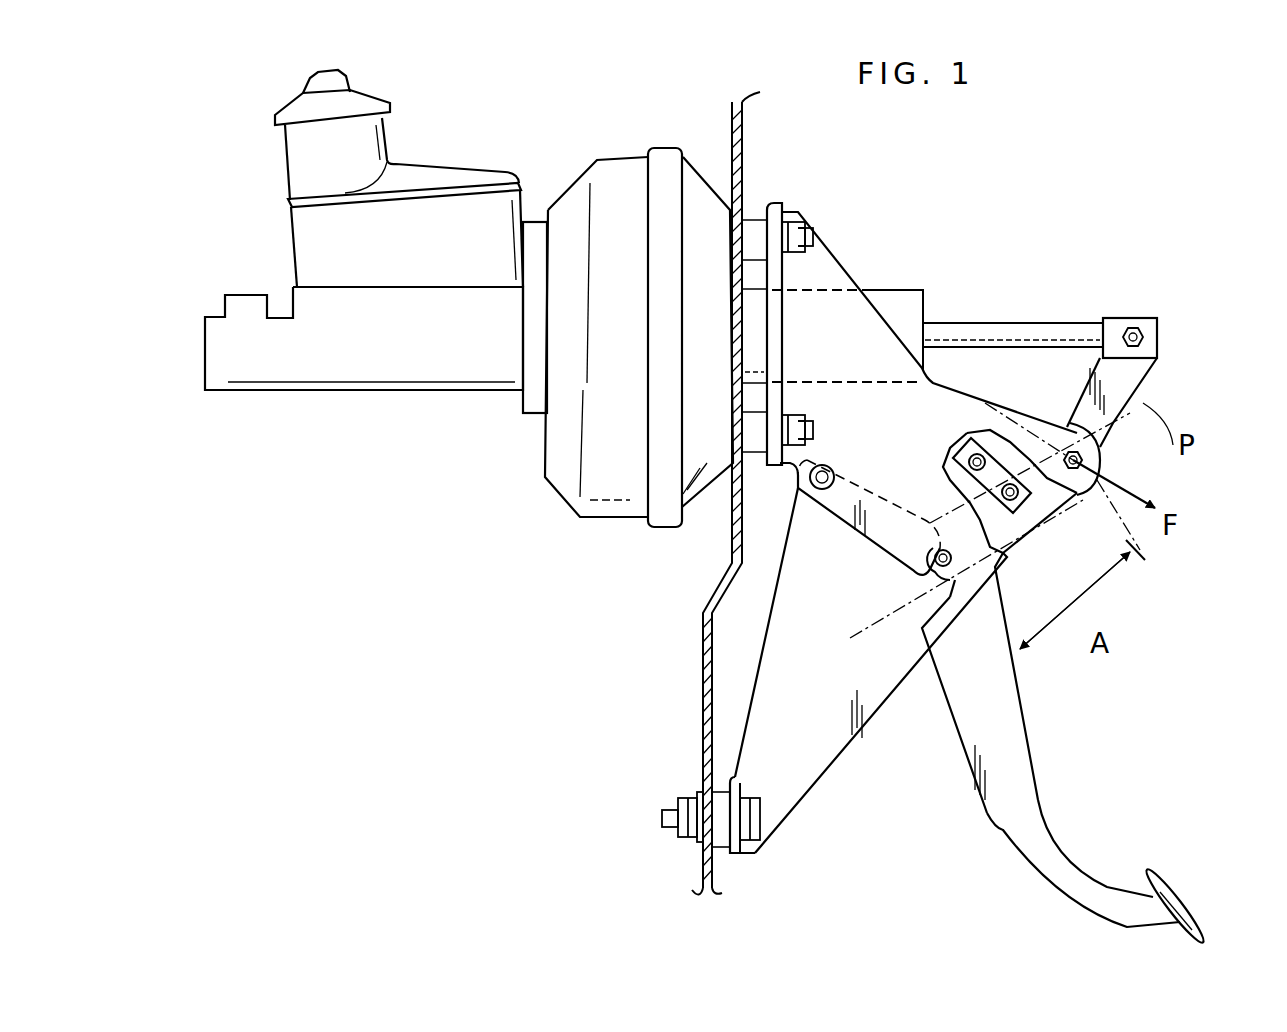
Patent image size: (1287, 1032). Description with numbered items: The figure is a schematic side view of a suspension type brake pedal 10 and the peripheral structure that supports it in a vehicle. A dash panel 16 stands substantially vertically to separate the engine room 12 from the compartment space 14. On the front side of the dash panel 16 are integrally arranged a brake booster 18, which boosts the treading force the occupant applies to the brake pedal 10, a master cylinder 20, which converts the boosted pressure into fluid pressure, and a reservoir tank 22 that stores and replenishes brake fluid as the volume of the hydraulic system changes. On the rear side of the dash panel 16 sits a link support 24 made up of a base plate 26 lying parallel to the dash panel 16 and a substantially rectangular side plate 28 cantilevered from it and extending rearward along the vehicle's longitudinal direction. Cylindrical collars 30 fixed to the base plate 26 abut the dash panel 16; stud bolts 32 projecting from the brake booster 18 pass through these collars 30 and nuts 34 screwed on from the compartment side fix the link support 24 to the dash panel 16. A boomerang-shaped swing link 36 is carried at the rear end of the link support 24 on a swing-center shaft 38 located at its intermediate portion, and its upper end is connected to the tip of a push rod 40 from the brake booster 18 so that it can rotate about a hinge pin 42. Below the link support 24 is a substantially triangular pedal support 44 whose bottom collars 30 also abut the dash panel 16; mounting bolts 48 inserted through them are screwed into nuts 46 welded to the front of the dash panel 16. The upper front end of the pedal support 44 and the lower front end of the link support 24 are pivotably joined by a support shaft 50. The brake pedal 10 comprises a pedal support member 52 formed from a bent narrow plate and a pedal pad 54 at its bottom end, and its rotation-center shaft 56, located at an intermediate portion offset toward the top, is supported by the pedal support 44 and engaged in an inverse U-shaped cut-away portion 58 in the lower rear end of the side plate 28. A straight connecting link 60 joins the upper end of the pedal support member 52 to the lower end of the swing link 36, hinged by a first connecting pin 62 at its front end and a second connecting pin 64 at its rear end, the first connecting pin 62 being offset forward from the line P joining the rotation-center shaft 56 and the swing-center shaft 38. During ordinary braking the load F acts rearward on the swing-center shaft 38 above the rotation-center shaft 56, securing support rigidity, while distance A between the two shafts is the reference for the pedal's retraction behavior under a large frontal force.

The brake pedal 10 is at (1043, 800).
The engine room 12 is at (637, 752).
The compartment space 14 is at (911, 752).
The dash panel 16 is at (703, 668).
The brake booster 18 is at (567, 483).
The master cylinder 20 is at (457, 378).
The reservoir tank 22 is at (497, 172).
The link support 24 is at (848, 263).
The base plate 26 is at (778, 208).
The side plate 28 is at (873, 338).
The cylindrical collars 30 is at (757, 225).
The stud bolts 32 is at (810, 236).
The nuts 34 is at (795, 215).
The swing link 36 is at (1140, 380).
The swing-center shaft 38 is at (1066, 452).
The push rod 40 is at (1045, 323).
The hinge pin 42 is at (1130, 318).
The pedal support 44 is at (815, 785).
The nuts 46 is at (684, 838).
The mounting bolts 48 is at (757, 847).
The support shaft 50 is at (824, 490).
The pedal support member 52 is at (1007, 727).
The pedal pad 54 is at (1177, 893).
The rotation-center shaft 56 is at (928, 530).
The cut-away portion 58 is at (937, 580).
The connecting link 60 is at (996, 448).
The first connecting pin 62 is at (966, 456).
The second connecting pin 64 is at (1018, 500).